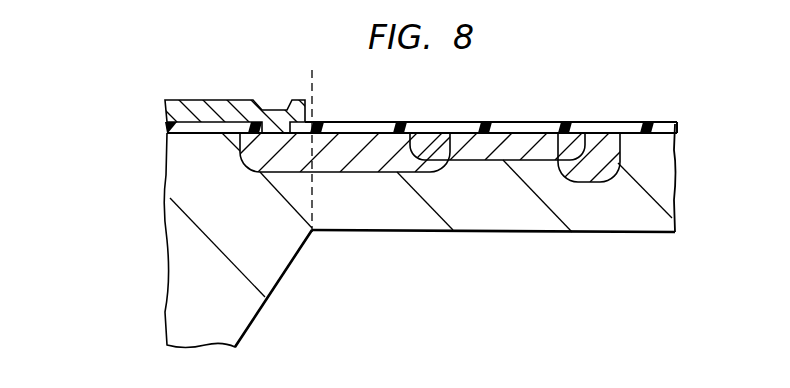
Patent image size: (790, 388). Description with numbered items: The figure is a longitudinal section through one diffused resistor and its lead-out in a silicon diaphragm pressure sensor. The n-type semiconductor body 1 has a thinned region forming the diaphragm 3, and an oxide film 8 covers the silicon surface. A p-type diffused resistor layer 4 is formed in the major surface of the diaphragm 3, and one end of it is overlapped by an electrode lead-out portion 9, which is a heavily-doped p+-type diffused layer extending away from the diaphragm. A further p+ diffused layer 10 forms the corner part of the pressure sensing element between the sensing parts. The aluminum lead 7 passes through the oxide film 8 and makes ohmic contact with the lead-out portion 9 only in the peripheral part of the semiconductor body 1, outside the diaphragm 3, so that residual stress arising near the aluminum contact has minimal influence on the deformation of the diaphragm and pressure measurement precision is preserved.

The semiconductor body 1 is at (278, 252).
The diaphragm 3 is at (595, 218).
The diffused resistor layer 4 is at (535, 146).
The aluminum lead 7 is at (247, 108).
The oxide film 8 is at (462, 128).
The electrode lead-out portion 9 is at (367, 145).
The p+ diffused layer 10 is at (605, 143).